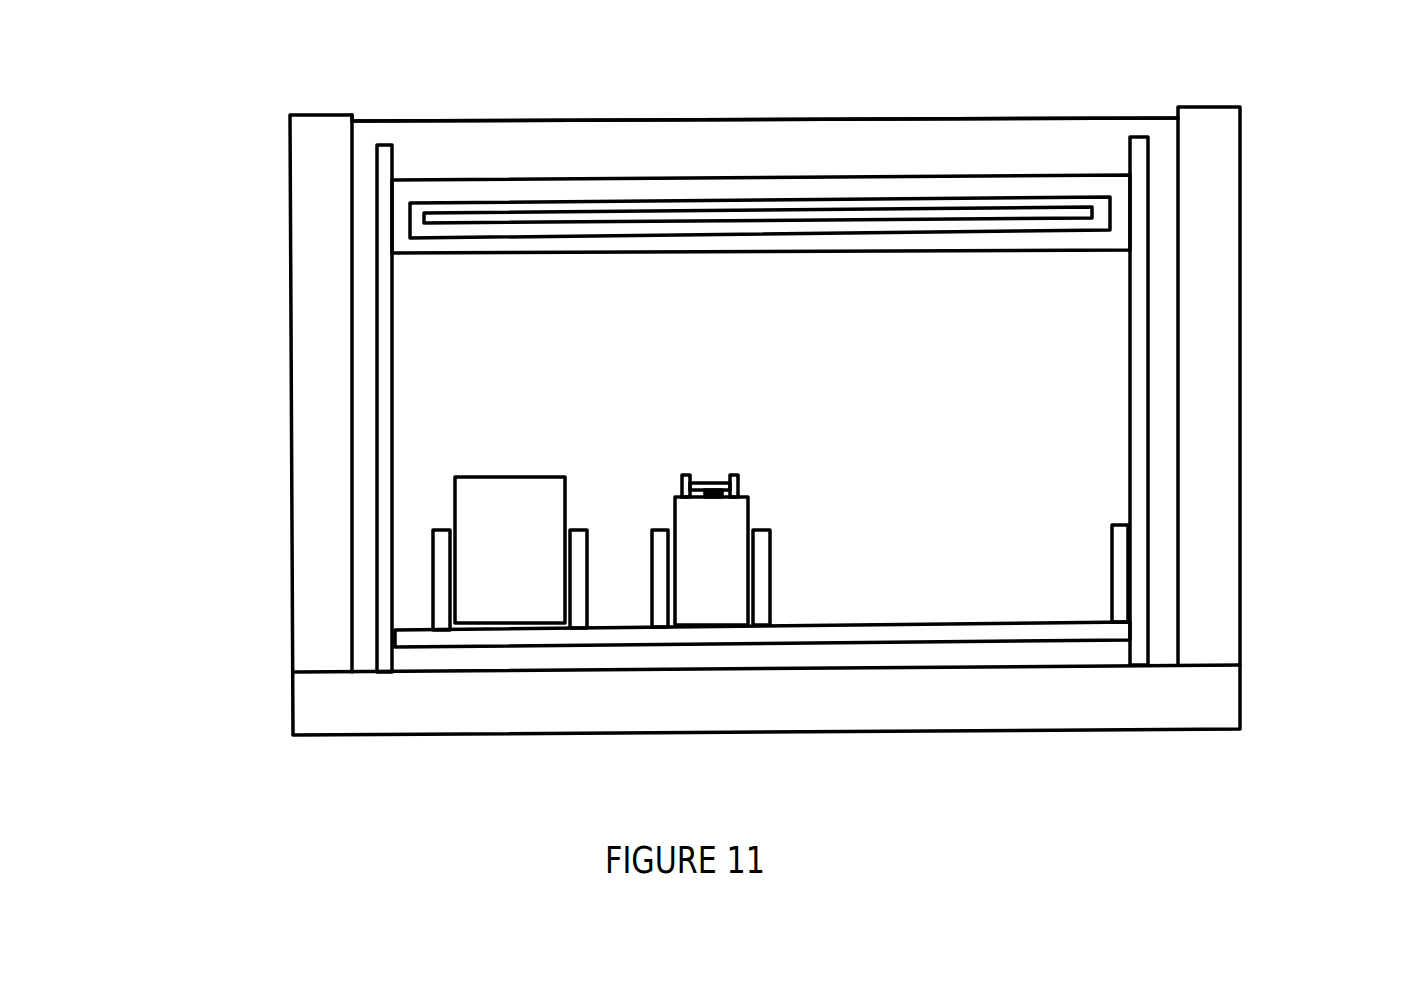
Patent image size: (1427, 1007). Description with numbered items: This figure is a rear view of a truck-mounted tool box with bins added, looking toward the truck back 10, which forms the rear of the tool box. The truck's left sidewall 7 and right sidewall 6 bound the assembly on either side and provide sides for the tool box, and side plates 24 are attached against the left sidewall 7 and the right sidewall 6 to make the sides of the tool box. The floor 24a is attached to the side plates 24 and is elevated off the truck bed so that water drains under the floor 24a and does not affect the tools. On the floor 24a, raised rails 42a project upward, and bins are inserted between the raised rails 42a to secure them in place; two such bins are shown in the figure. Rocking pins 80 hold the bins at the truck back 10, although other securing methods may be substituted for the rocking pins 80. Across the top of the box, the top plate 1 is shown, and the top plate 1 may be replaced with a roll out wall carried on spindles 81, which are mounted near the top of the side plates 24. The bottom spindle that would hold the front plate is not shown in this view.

The top plate 1 is at (460, 217).
The right sidewall 6 is at (1212, 288).
The left sidewall 7 is at (292, 300).
The truck back 10 is at (760, 118).
The side plates 24 is at (385, 367).
The floor 24a is at (958, 632).
The raised rails 42a is at (443, 590).
The rocking pins 80 is at (740, 485).
The spindles 81 is at (1053, 187).